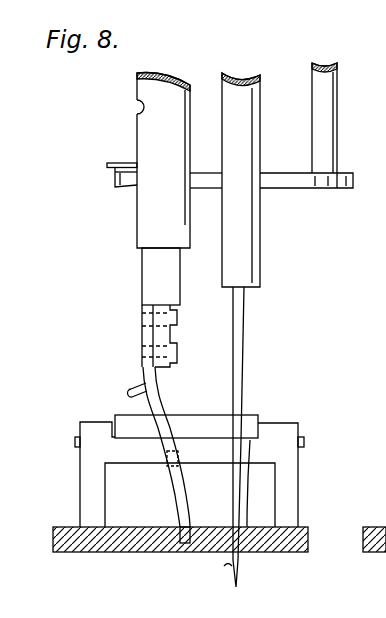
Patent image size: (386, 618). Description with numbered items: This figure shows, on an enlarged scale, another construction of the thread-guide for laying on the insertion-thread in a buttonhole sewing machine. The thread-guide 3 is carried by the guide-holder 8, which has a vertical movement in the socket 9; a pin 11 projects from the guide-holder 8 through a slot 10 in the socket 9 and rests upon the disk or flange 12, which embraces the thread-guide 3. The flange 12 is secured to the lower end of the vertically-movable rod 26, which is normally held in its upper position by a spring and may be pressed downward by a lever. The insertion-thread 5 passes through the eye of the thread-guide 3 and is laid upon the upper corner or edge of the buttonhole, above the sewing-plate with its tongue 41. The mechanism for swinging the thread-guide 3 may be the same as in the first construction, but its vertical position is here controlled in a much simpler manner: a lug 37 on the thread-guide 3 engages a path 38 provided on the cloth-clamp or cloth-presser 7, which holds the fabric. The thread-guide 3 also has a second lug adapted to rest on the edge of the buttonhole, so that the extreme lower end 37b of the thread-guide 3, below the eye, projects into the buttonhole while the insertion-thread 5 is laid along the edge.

The thread-guide 3 is at (157, 405).
The insertion-thread 5 is at (158, 521).
The cloth-clamp or cloth-presser 7 is at (385, 479).
The guide-holder 8 is at (172, 284).
The socket 9 is at (185, 146).
The slot 10 is at (136, 107).
The pin 11 is at (107, 165).
The disk or flange 12 is at (115, 187).
The vertically-movable rod 26 is at (327, 117).
The lug 37 is at (180, 443).
The extreme lower end of the thread-guide 37b is at (183, 546).
The path 38 is at (132, 461).
The tongue 41 is at (189, 528).